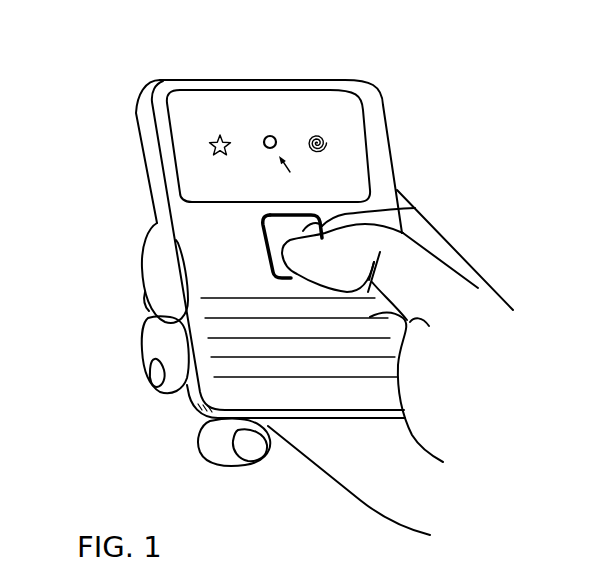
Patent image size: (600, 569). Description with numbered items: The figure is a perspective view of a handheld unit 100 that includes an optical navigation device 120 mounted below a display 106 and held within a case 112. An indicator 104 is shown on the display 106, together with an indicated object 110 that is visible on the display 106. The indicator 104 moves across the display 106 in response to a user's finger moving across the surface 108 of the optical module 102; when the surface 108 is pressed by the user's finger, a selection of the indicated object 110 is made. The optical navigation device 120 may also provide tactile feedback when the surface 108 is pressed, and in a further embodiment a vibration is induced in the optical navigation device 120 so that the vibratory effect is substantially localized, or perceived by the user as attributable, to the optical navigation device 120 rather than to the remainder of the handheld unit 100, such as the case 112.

The handheld unit 100 is at (118, 72).
The optical module 102 is at (268, 258).
The indicator 104 is at (268, 168).
The display 106 is at (315, 102).
The surface 108 is at (415, 208).
The indicated object 110 is at (258, 132).
The case 112 is at (375, 133).
The optical navigation device 120 is at (258, 245).